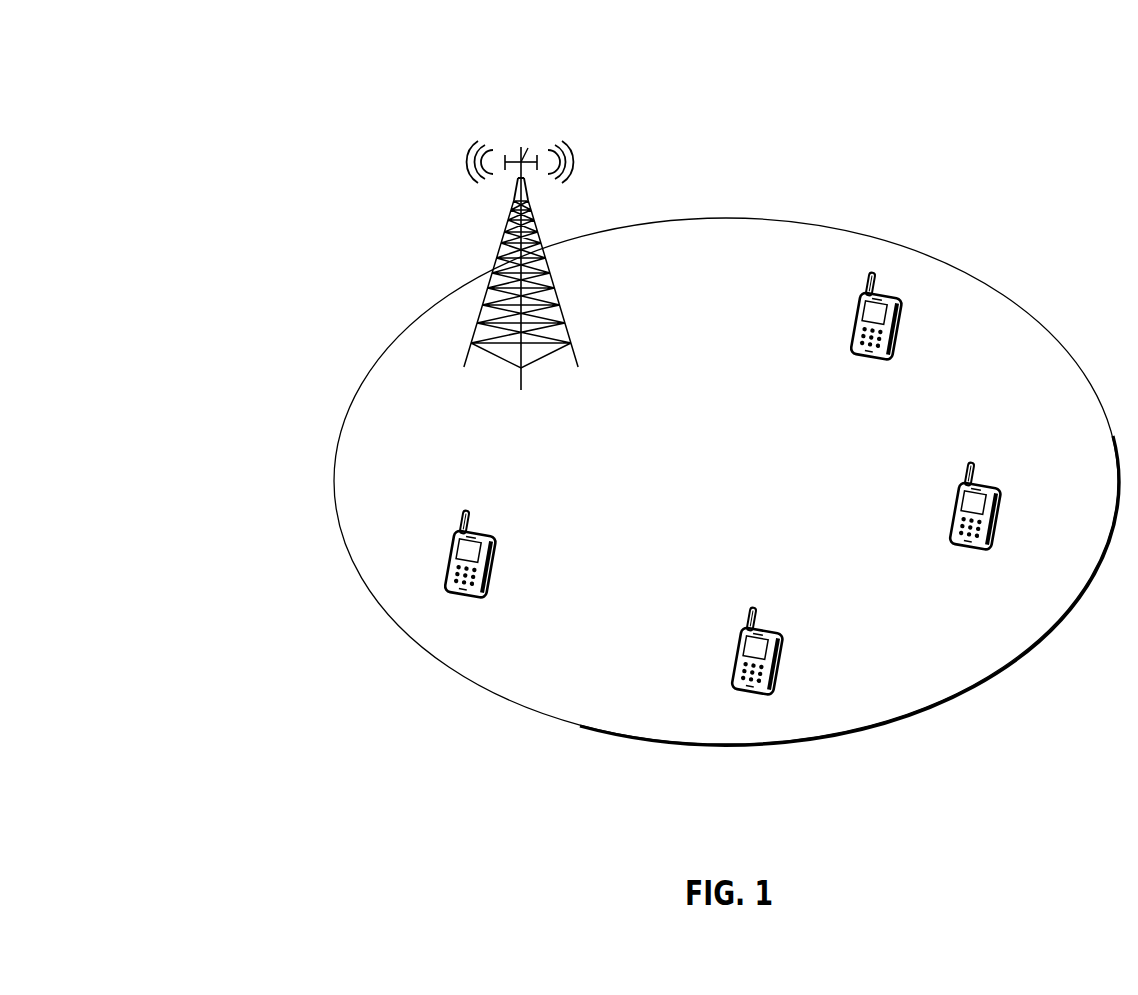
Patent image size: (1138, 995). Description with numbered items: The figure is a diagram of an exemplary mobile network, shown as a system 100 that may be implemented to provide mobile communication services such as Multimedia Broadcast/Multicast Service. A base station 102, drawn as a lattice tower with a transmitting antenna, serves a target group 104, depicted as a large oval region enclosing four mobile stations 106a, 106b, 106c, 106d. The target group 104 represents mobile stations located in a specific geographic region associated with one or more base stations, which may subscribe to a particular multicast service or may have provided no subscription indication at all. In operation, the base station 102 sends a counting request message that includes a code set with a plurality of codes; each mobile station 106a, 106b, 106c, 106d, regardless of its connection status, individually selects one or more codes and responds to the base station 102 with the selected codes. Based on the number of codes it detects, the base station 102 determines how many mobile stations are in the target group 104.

The system 100 is at (107, 67).
The base station 102 is at (572, 138).
The target group 104 is at (837, 222).
The mobile station 106a is at (920, 328).
The mobile station 106b is at (1007, 482).
The mobile station 106c is at (795, 647).
The mobile station 106d is at (508, 543).